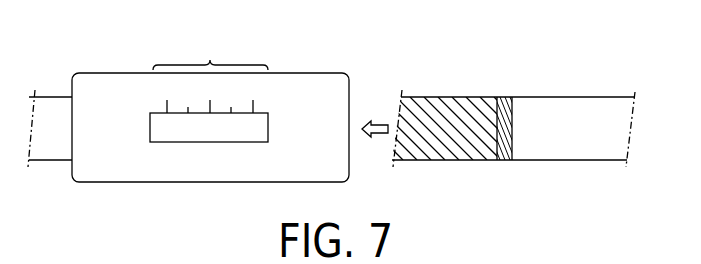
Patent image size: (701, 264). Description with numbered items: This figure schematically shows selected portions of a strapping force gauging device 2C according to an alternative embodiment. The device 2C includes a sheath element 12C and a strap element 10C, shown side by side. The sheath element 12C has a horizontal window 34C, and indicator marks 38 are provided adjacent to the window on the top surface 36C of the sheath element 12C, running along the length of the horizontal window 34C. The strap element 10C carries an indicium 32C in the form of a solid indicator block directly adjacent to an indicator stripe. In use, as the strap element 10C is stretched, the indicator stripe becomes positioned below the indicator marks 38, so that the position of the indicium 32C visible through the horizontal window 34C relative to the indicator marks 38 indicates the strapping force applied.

The strapping force gauging device 2C is at (375, 58).
The strap element 10C is at (588, 108).
The sheath element 12C is at (113, 85).
The indicium 32C is at (507, 92).
The horizontal window 34C is at (155, 128).
The top surface 36C is at (318, 85).
The indicator marks 38 is at (210, 74).